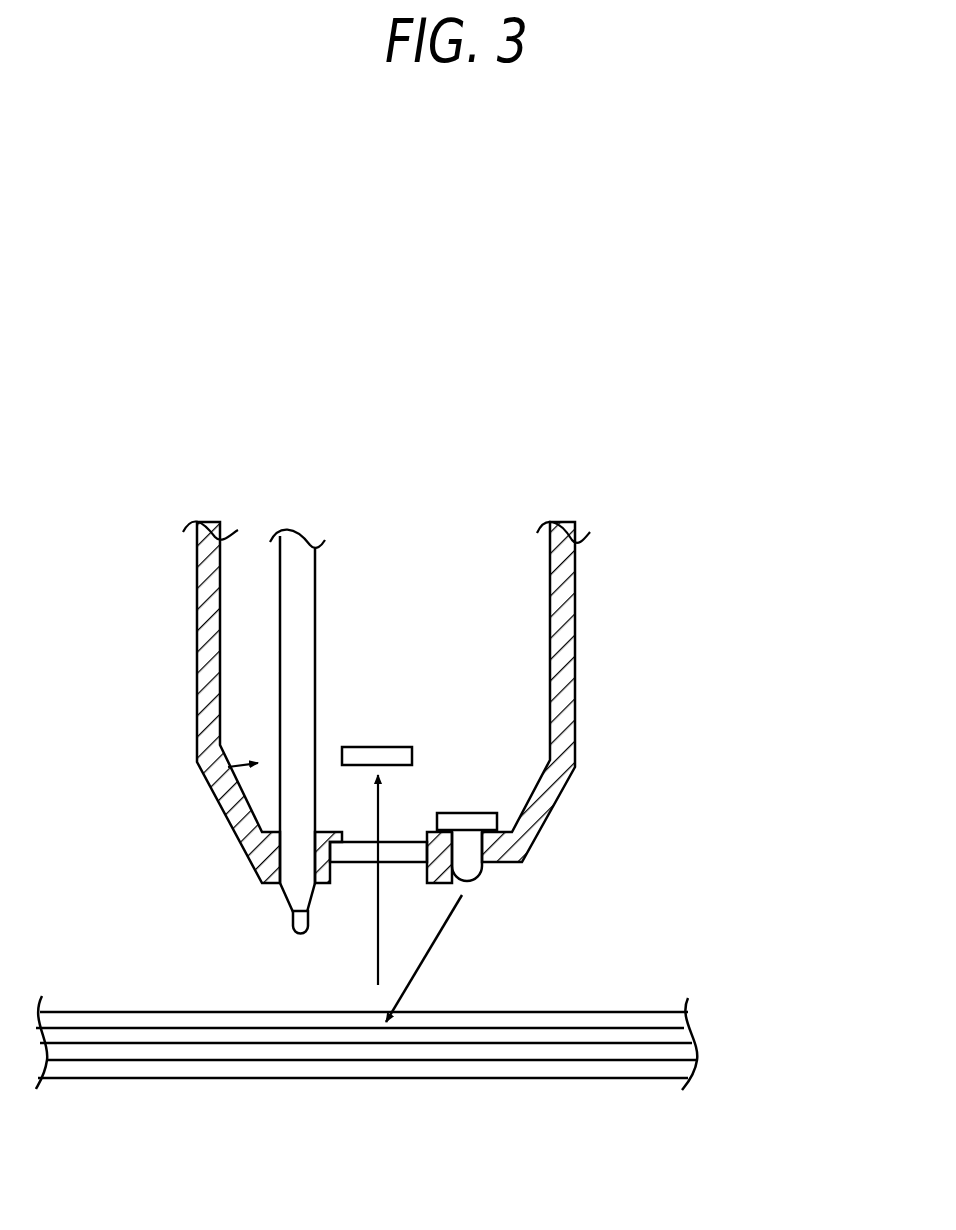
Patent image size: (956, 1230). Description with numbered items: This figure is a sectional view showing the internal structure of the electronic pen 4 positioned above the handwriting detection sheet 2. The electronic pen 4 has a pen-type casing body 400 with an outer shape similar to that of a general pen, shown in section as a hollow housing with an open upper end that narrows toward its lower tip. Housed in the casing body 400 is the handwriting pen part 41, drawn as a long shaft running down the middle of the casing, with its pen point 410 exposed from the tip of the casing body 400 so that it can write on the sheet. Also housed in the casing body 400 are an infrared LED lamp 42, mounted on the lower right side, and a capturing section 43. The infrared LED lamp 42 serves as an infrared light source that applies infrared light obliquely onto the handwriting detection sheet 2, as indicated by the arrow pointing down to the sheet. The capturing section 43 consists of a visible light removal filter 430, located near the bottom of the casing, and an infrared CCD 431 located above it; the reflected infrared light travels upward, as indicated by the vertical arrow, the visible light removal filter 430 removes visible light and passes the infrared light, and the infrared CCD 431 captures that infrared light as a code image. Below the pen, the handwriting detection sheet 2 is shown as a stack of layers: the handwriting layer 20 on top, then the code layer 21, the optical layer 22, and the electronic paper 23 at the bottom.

The handwriting detection sheet 2 is at (840, 962).
The handwriting layer 20 is at (685, 1022).
The code layer 21 is at (692, 1040).
The optical layer 22 is at (693, 1060).
The electronic paper 23 is at (692, 1079).
The electronic pen 4 is at (184, 320).
The casing body 400 is at (203, 683).
The pen part 41 is at (205, 785).
The pen point 410 is at (293, 917).
The infrared LED lamp 42 is at (470, 878).
The capturing section 43 is at (677, 613).
The visible light removal filter 430 is at (392, 850).
The infrared CCD 431 is at (413, 757).